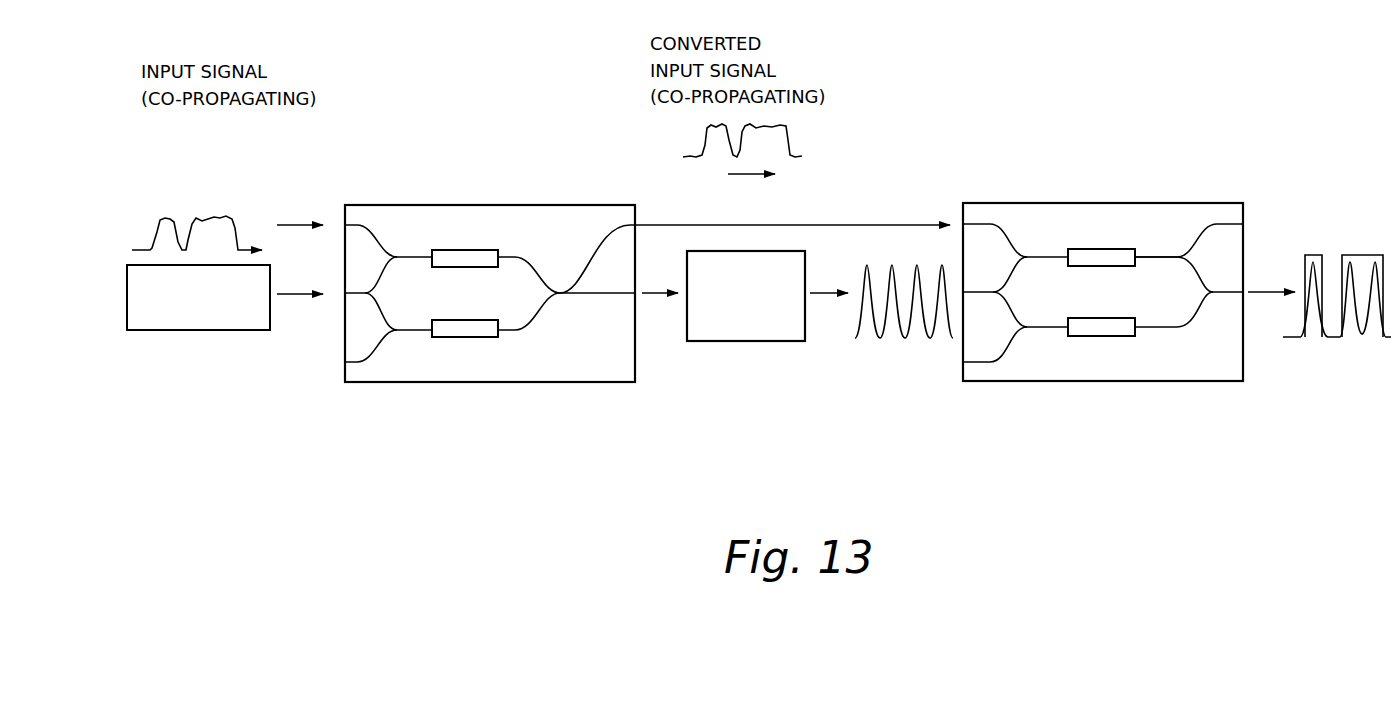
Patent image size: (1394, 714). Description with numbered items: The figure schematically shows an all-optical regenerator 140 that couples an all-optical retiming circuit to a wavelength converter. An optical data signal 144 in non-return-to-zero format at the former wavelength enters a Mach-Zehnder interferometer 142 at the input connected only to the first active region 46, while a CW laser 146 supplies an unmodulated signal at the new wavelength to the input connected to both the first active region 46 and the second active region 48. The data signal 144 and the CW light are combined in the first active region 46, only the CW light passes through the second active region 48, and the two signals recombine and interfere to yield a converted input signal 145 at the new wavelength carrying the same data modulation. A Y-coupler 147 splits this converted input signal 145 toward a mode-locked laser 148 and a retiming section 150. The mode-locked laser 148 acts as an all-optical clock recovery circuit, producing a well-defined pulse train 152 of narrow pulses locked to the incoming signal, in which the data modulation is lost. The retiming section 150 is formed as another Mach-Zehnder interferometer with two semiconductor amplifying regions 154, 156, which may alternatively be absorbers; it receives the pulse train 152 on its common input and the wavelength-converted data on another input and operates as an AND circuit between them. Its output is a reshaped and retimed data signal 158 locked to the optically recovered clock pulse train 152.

The optical data signal 144 is at (216, 213).
The CW laser 146 is at (193, 331).
The all-optical 3R regenerator 140 is at (489, 264).
The Mach-Zehnder interferometer 142 is at (418, 383).
The first active region 46 is at (453, 270).
The second active region 48 is at (475, 318).
The Y-coupler 147 is at (565, 297).
The converted input signal 145 is at (783, 135).
The mode-locked laser 148 is at (753, 342).
The pulse train 152 is at (903, 340).
The retiming section 150 is at (1099, 307).
The semiconductor amplifying region 154 is at (1092, 268).
The semiconductor amplifying region 156 is at (1103, 318).
The retimed data signal 158 is at (1315, 253).